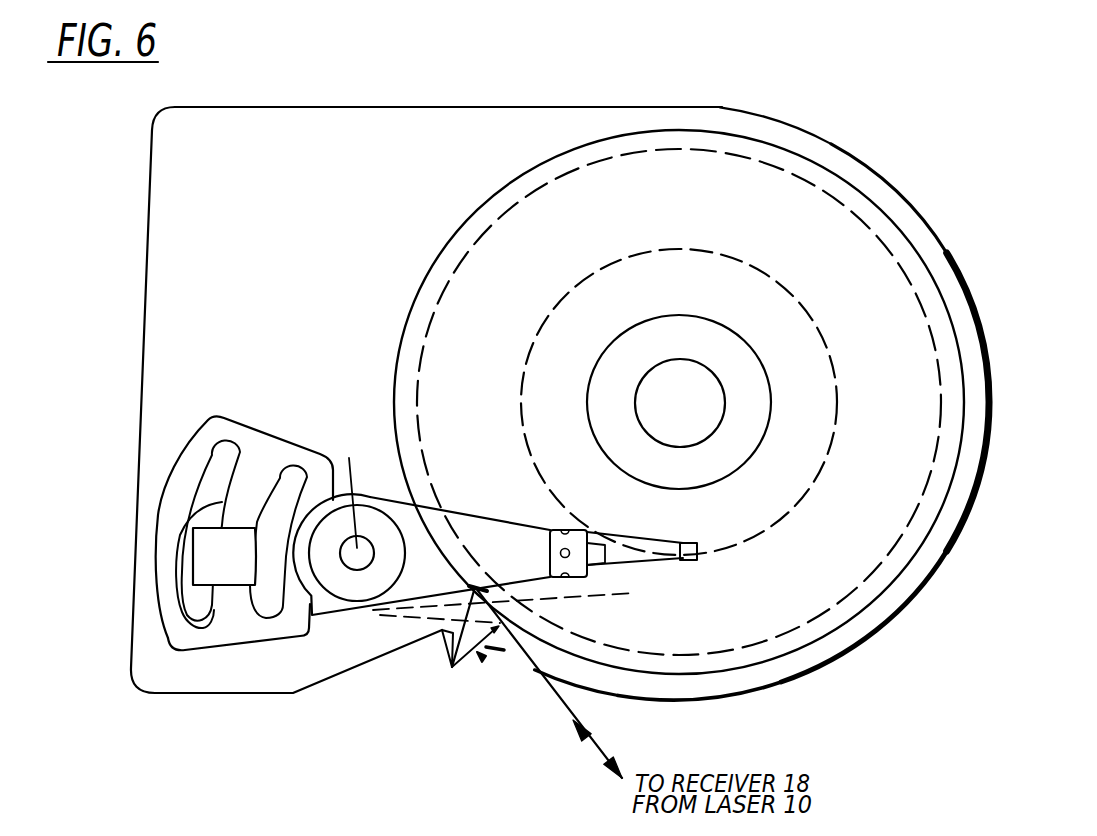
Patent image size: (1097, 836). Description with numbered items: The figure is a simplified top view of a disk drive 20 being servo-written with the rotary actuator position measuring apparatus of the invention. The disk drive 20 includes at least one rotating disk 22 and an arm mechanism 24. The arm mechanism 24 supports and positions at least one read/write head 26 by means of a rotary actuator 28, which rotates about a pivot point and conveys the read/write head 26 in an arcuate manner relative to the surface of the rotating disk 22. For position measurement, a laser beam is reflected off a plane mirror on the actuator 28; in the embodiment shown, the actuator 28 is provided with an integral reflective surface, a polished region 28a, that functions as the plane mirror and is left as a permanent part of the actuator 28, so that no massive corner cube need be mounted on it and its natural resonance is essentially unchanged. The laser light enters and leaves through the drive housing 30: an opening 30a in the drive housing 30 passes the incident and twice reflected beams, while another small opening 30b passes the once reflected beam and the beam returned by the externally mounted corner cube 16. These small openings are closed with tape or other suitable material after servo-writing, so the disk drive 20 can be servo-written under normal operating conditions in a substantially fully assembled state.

The corner cube 16 is at (450, 665).
The disk drive 20 is at (962, 199).
The rotating disk 22 is at (952, 312).
The arm mechanism 24 is at (282, 388).
The read/write head 26 is at (687, 560).
The rotary actuator 28 is at (337, 612).
The polished region 28a is at (497, 603).
The drive housing 30 is at (851, 647).
The opening 30a is at (487, 648).
The small opening 30b is at (482, 660).